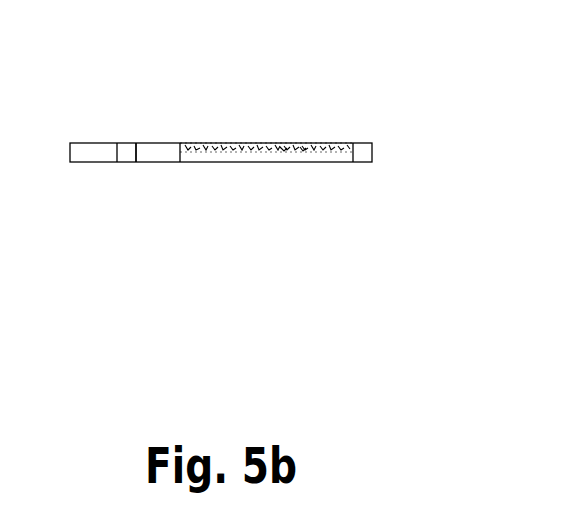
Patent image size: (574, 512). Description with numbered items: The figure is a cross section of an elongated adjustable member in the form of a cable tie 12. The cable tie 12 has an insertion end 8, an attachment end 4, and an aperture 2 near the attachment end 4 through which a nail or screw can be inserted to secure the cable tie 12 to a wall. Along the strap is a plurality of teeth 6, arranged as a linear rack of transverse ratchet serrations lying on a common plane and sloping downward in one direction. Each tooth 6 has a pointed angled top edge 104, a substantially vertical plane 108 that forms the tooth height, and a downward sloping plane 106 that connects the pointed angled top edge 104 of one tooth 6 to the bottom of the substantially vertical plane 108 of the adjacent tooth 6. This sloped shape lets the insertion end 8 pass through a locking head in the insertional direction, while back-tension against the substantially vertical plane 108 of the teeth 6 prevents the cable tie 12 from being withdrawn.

The cable tie 12 is at (390, 98).
The aperture 2 is at (128, 162).
The attachment end 4 is at (152, 162).
The teeth 6 is at (210, 143).
The insertion end 8 is at (358, 162).
The pointed angled top edge 104 is at (295, 143).
The downward sloping plane 106 is at (285, 148).
The substantially vertical plane 108 is at (303, 148).